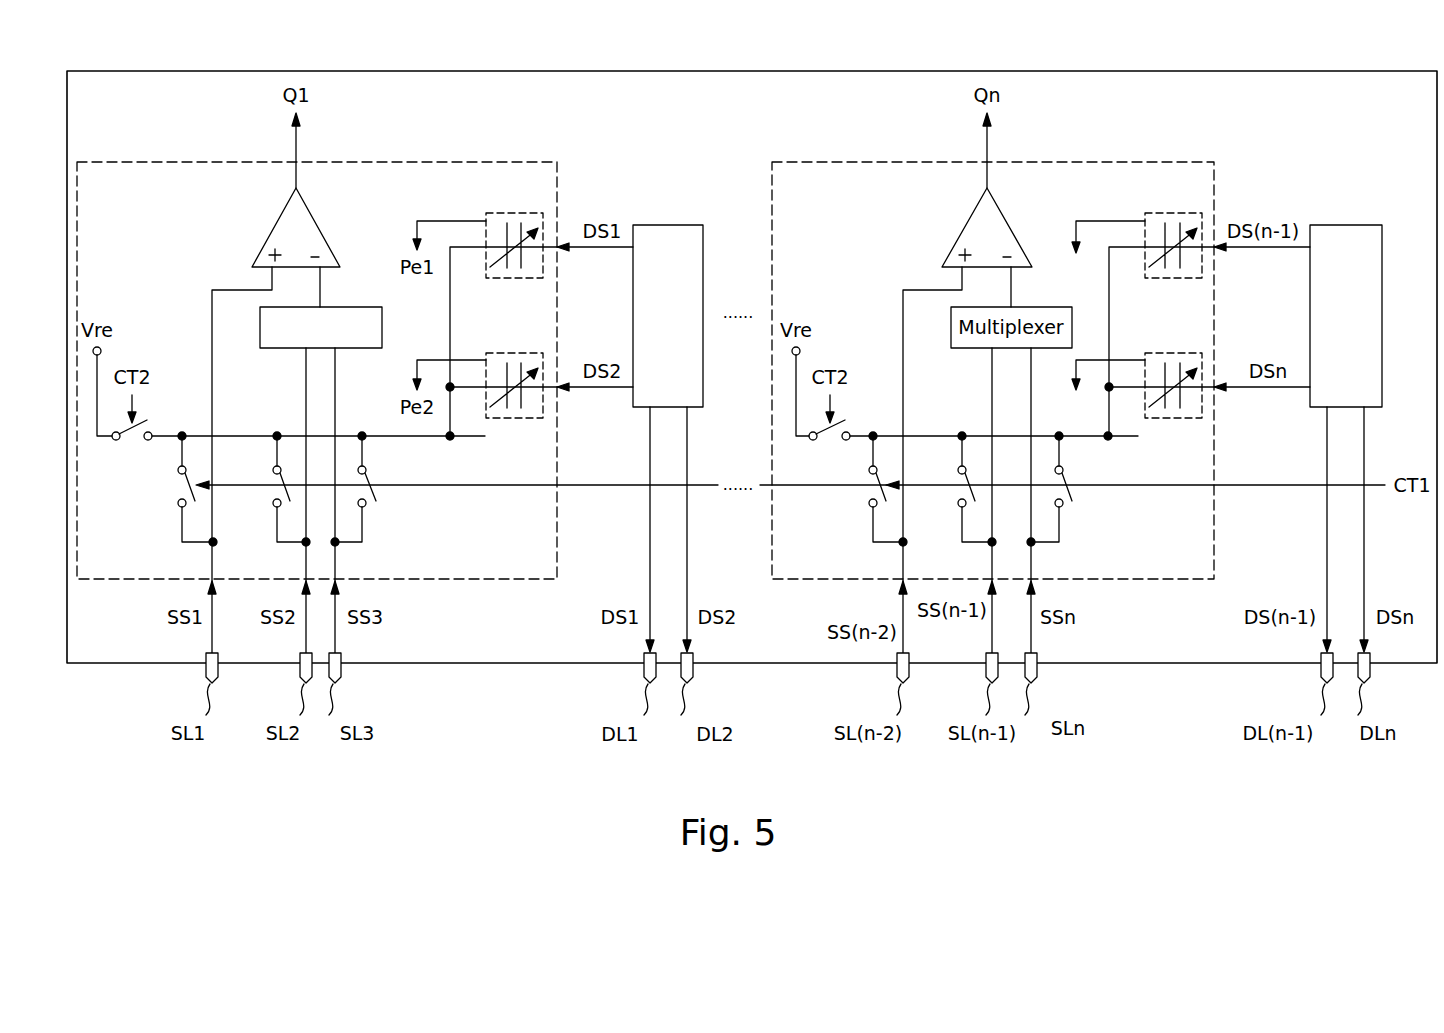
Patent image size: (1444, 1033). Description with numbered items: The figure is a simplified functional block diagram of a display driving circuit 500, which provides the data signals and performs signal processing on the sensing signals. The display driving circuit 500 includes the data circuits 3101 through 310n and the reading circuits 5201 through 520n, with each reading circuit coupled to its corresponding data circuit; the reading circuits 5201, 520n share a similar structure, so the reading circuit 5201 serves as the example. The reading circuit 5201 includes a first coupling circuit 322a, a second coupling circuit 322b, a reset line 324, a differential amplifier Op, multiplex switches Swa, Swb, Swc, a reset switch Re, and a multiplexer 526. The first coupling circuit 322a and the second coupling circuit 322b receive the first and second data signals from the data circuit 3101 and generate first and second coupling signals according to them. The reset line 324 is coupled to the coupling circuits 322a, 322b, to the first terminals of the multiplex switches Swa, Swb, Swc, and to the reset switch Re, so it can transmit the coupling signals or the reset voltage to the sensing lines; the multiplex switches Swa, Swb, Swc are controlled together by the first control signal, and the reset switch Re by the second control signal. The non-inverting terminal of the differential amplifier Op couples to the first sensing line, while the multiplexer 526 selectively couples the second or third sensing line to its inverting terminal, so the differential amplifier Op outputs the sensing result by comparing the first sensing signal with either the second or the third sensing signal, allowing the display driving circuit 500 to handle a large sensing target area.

The display driving circuit 500 is at (468, 70).
The reading circuit 5201 is at (410, 161).
The reading circuit 520n is at (1133, 161).
The first coupling circuit 322a is at (522, 212).
The second coupling circuit 322b is at (522, 352).
The data circuit 3101 is at (668, 224).
The data circuit 310n is at (1345, 224).
The multiplexer 526 is at (283, 349).
The reset line 324 is at (470, 437).
The differential amplifier Op is at (262, 218).
The reset switch Re is at (150, 441).
The multiplex switch Swa is at (178, 507).
The multiplex switch Swb is at (273, 507).
The multiplex switch Swc is at (367, 507).